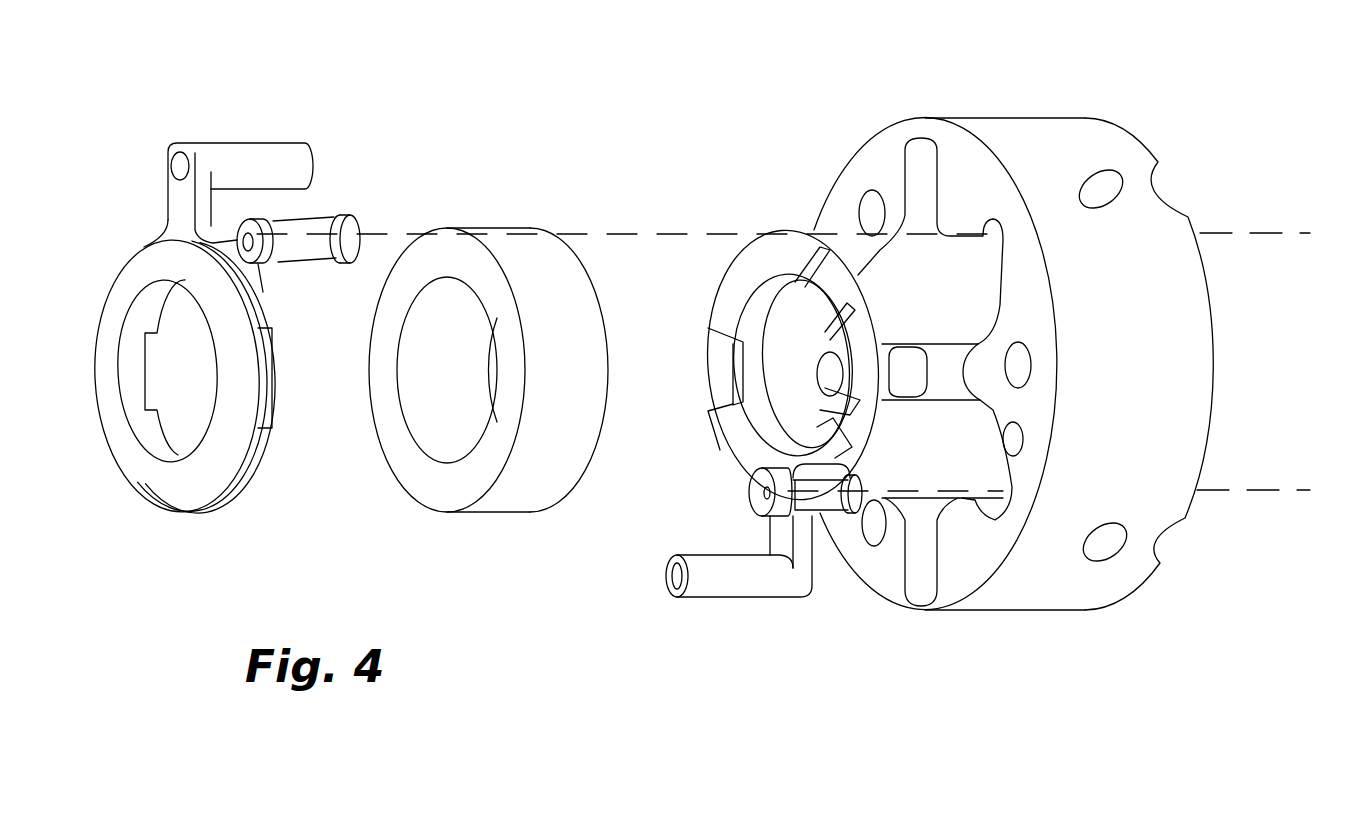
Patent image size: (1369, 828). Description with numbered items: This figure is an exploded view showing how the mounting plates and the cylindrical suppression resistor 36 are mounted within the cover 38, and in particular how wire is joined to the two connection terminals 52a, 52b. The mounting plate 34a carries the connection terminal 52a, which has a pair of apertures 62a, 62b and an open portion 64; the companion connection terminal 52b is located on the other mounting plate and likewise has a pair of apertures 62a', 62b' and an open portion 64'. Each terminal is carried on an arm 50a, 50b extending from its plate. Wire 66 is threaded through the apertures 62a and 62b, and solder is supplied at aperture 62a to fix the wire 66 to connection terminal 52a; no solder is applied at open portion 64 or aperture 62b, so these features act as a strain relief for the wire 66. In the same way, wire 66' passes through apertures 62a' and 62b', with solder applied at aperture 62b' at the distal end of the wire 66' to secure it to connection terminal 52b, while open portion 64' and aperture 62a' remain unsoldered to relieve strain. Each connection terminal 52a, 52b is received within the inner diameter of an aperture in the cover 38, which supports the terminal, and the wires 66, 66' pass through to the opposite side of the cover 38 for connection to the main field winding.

The mounting plate 34a is at (98, 289).
The cylindrical suppression resistor 36 is at (398, 483).
The cover 38 is at (1150, 126).
The first arm 50a is at (212, 127).
The second arm 50b is at (802, 610).
The connection terminal 52a is at (339, 201).
The connection terminal 52b is at (789, 502).
The aperture 62a is at (264, 178).
The aperture 62b is at (355, 189).
The aperture 62a' is at (906, 478).
The aperture 62b' is at (716, 496).
The open portion 64 is at (309, 263).
The open portion 64' is at (750, 455).
The wire 66 is at (783, 200).
The wire 66' is at (1049, 457).